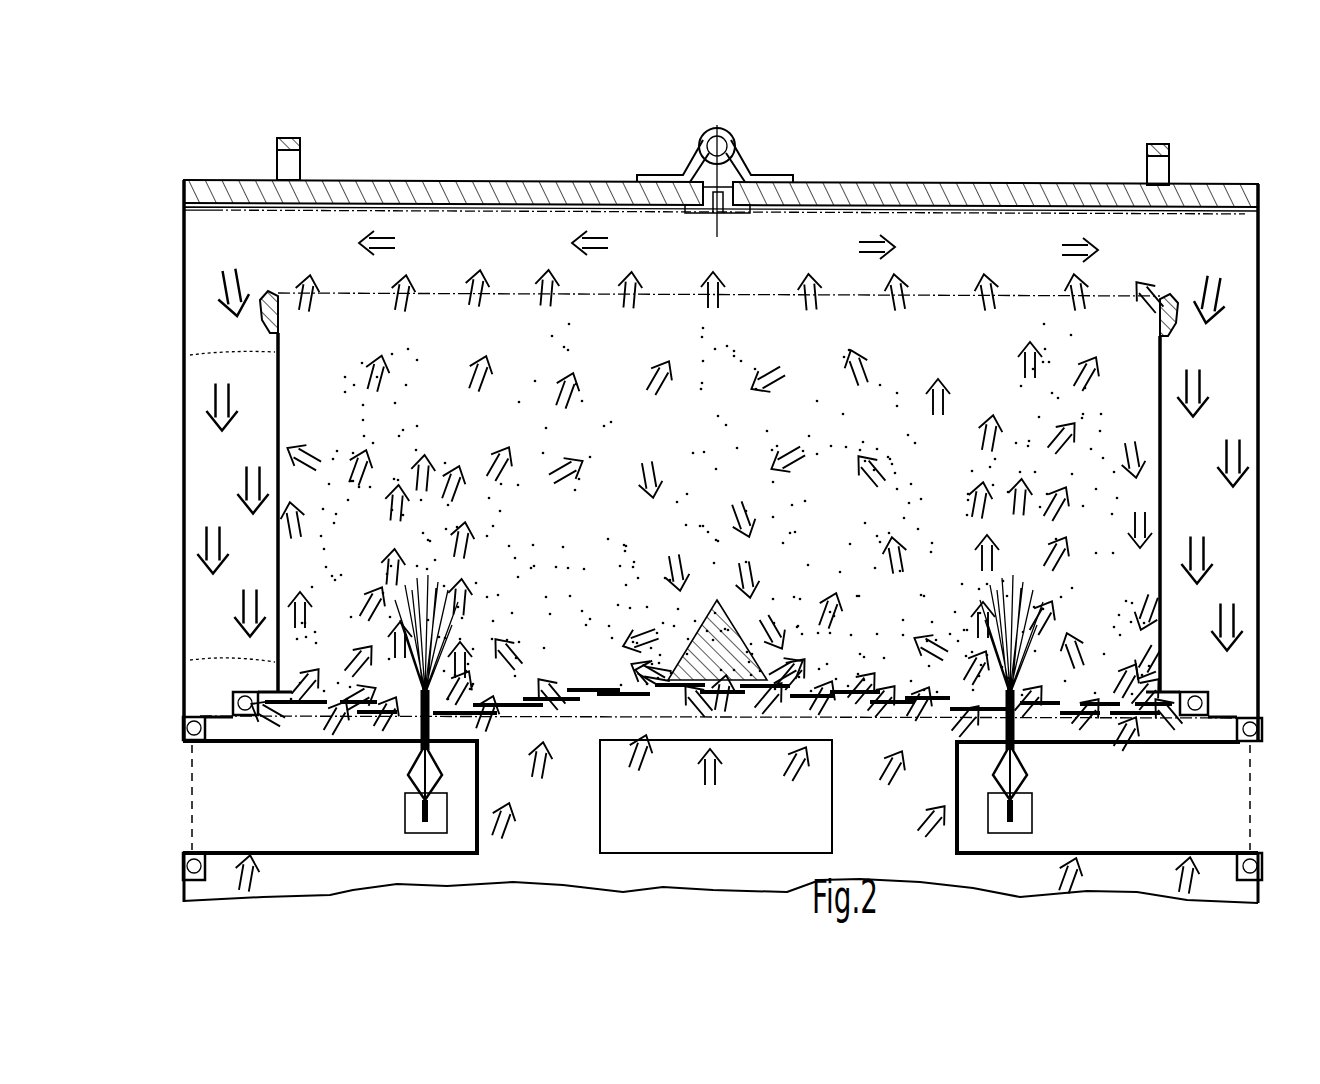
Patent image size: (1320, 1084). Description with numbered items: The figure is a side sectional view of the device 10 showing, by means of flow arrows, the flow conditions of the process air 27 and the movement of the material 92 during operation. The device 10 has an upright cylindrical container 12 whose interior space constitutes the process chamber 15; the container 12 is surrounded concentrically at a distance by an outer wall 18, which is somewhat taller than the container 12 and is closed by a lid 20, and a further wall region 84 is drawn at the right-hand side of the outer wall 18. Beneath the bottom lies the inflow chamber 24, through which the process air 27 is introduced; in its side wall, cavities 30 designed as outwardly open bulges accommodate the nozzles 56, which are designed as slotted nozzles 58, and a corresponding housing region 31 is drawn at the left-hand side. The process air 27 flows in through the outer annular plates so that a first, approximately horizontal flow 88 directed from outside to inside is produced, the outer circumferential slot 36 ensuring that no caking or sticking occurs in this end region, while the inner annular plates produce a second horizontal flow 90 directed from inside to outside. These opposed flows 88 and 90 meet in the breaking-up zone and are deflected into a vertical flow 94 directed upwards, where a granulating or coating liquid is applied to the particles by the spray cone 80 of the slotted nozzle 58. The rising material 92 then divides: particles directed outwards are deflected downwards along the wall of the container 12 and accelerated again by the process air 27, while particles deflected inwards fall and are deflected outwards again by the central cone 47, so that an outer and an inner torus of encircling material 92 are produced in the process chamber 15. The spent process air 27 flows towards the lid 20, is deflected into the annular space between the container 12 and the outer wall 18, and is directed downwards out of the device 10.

The device 10 is at (866, 178).
The container 12 is at (183, 380).
The process chamber 15 is at (628, 333).
The outer wall 18 is at (183, 302).
The lid 20 is at (483, 192).
The inflow chamber 24 is at (916, 815).
The process air 27 is at (700, 790).
The cavities 30 is at (1240, 822).
The left housing 31 is at (225, 800).
The circumferential slot 36 is at (183, 655).
The central cone 47 is at (703, 613).
The nozzles 56 is at (410, 775).
The slotted nozzle 58 is at (1030, 770).
The spray cone 80 is at (423, 583).
The outer right wall 84 is at (1262, 357).
The first flow 88 is at (318, 685).
The second flow 90 is at (550, 705).
The material 92 is at (470, 447).
The vertical flow 94 is at (470, 540).